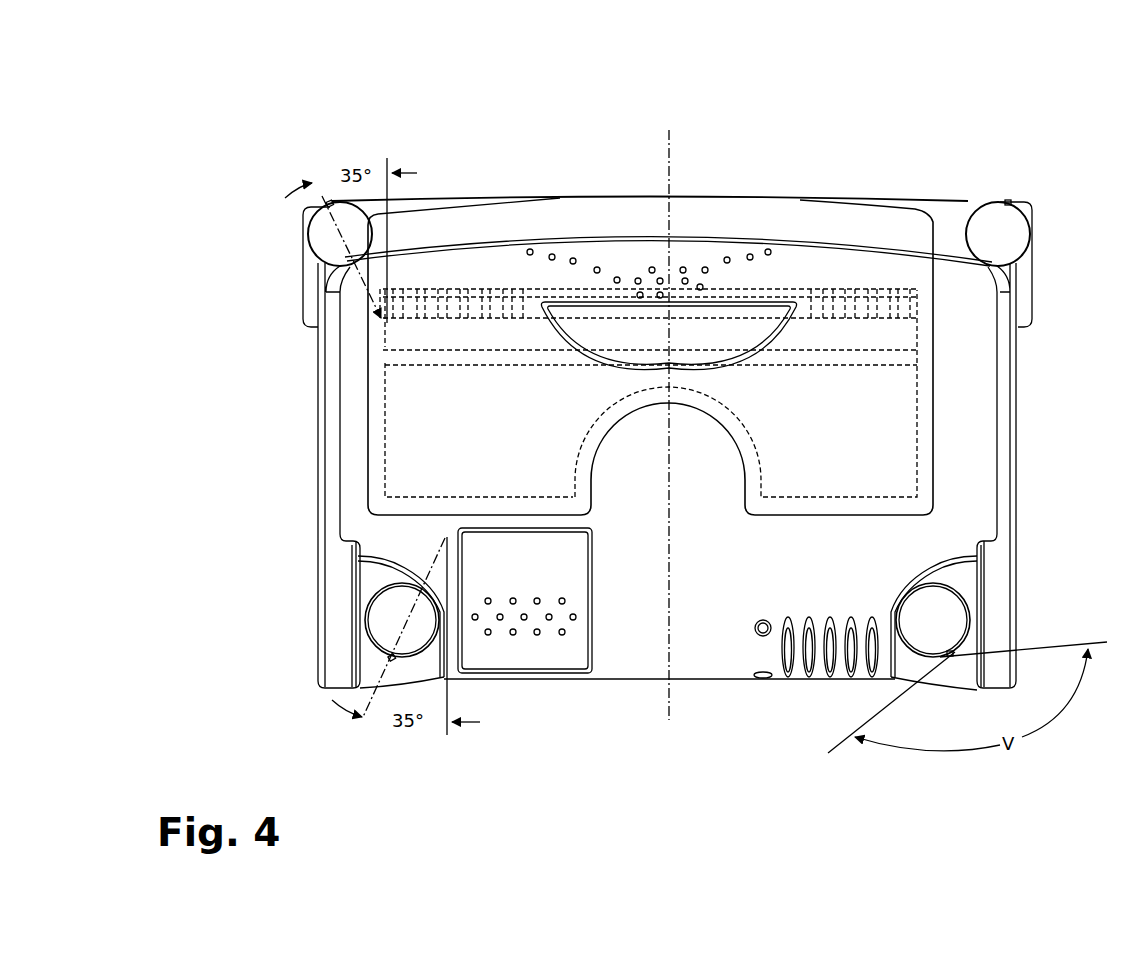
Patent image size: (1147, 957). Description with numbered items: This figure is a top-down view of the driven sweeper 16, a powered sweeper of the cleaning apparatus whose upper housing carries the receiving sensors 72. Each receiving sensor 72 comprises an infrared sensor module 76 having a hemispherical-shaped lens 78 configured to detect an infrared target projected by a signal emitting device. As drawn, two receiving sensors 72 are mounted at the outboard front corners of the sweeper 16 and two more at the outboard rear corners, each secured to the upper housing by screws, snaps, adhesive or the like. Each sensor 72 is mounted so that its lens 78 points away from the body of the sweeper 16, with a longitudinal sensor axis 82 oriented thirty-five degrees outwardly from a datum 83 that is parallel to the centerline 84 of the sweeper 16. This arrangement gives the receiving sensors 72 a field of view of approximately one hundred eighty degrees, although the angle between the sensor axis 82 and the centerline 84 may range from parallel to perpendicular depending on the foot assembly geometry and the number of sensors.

The driven sweeper 16 is at (902, 130).
The receiving sensor 72 is at (1012, 237).
The infrared sensor module 76 is at (315, 262).
The hemispherical-shaped lens 78 is at (331, 202).
The longitudinal sensor axis 82 is at (322, 196).
The datum 83 is at (389, 192).
The centerline 84 is at (670, 150).